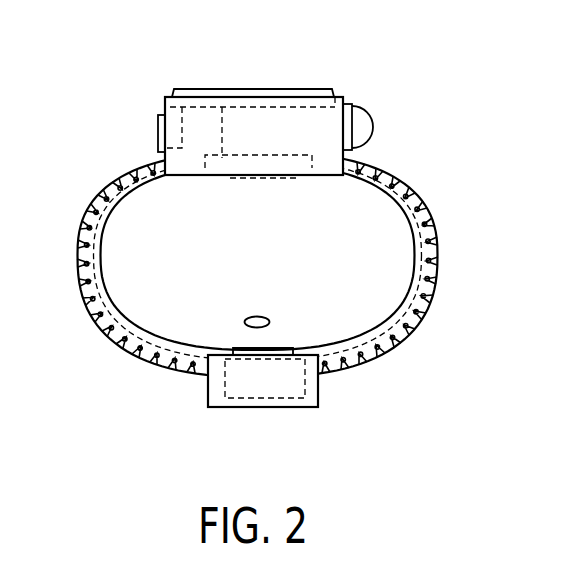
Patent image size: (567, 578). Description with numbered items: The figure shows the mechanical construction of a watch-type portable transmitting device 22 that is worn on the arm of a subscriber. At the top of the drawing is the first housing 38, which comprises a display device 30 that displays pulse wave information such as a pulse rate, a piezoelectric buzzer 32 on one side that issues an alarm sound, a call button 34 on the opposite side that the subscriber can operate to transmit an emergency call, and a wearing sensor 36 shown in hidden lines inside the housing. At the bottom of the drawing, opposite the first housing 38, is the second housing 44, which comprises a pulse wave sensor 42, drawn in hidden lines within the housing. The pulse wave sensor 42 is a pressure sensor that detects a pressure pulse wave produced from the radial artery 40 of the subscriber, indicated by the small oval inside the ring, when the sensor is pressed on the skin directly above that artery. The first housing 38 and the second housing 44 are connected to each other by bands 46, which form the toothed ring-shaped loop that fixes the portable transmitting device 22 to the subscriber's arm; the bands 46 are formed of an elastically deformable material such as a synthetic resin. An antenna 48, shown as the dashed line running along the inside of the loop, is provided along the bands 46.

The portable transmitting device 22 is at (276, 244).
The display device 30 is at (293, 88).
The piezoelectric buzzer 32 is at (158, 131).
The call button 34 is at (362, 128).
The wearing sensor 36 is at (214, 97).
The first housing 38 is at (345, 98).
The radial artery 40 is at (267, 320).
The pulse wave sensor 42 is at (277, 380).
The second housing 44 is at (208, 402).
The bands 46 is at (92, 208).
The antenna 48 is at (92, 256).